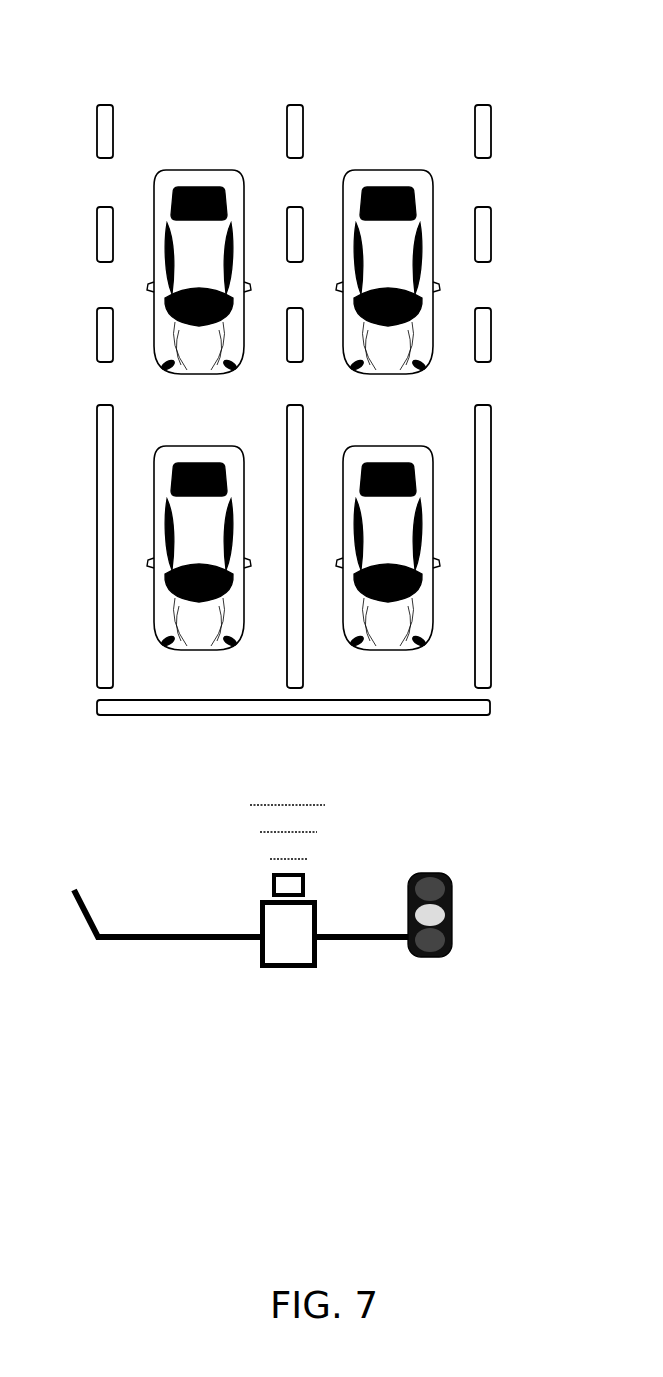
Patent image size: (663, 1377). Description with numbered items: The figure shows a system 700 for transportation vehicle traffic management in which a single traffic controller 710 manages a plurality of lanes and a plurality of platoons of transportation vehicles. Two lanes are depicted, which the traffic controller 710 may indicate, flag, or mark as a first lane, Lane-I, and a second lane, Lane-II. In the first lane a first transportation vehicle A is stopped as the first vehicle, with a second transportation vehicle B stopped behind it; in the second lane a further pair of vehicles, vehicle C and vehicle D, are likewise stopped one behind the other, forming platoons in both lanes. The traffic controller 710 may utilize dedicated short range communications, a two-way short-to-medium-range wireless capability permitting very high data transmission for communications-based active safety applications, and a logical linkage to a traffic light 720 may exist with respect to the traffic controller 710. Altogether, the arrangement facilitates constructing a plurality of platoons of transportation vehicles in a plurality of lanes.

The system for transportation vehicle traffic management 700 is at (273, 40).
The traffic controller 710 is at (273, 996).
The traffic light 720 is at (417, 985).
The first transportation vehicle A is at (388, 564).
The second transportation vehicle B is at (388, 287).
The vehicle C is at (199, 564).
The vehicle D is at (199, 287).